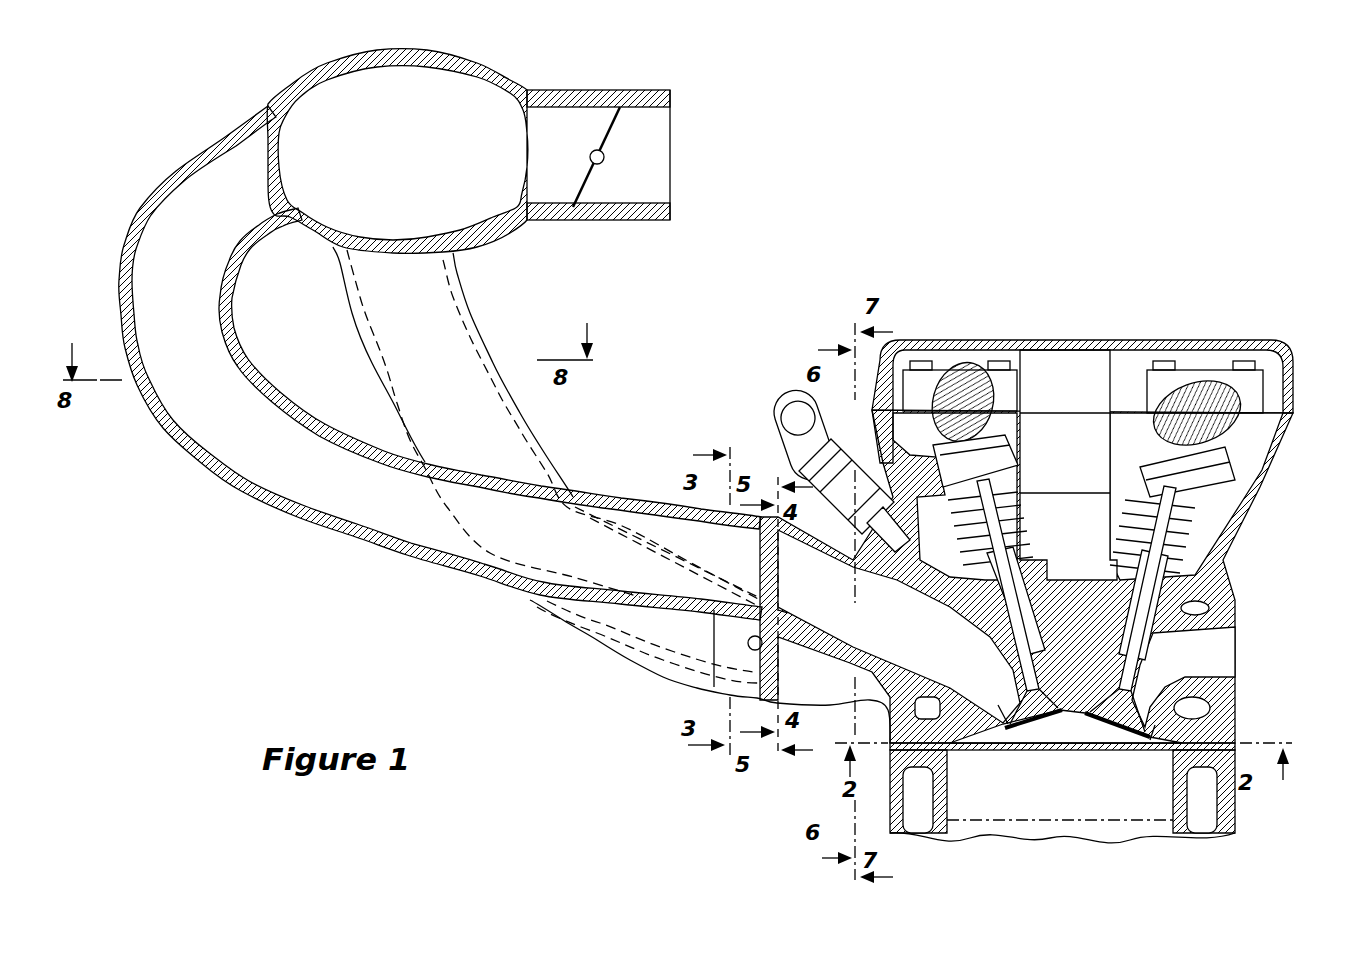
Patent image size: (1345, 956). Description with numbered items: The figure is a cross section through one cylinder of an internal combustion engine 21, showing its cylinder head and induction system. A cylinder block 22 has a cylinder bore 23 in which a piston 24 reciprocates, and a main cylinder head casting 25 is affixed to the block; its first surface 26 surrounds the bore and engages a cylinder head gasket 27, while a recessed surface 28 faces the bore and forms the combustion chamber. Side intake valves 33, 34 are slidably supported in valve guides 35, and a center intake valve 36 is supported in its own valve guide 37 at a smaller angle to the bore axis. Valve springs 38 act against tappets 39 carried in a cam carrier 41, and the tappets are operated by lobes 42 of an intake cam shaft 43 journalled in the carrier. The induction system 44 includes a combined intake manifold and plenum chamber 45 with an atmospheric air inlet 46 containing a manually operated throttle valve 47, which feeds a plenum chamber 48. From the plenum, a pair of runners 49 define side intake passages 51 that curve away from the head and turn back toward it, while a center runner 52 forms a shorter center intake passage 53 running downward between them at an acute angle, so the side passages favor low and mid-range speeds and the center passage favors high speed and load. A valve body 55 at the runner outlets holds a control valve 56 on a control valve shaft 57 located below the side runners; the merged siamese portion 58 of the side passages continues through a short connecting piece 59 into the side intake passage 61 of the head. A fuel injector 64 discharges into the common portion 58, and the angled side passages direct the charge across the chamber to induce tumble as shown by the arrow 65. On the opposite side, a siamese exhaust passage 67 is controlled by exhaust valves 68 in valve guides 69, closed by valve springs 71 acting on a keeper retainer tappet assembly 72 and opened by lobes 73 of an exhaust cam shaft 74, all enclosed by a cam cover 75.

The internal combustion engine 21 is at (1115, 302).
The cylinder block 22 is at (1225, 830).
The cylinder bore 23 is at (1192, 773).
The piston 24 is at (995, 845).
The main cylinder head casting 25 is at (1235, 680).
The first surface 26 is at (1225, 800).
The cylinder head gasket 27 is at (1233, 743).
The recessed surface 28 is at (1095, 740).
The side intake valve 33 is at (1040, 730).
The side intake valve 34 is at (1008, 585).
The valve guide 35 is at (1045, 620).
The center intake valve 36 is at (1000, 722).
The valve guide 37 is at (899, 626).
The valve spring 38 is at (1020, 562).
The tappet 39 is at (1010, 460).
The cam carrier 41 is at (1260, 488).
The lobe 42 is at (960, 360).
The intake cam shaft 43 is at (1005, 395).
The induction system 44 is at (200, 488).
The combined intake manifold and plenum chamber 45 is at (125, 270).
The atmospheric air inlet 46 is at (610, 92).
The throttle valve 47 is at (605, 150).
The plenum chamber 48 is at (455, 55).
The runner 49 is at (450, 582).
The side intake passage 51 is at (357, 510).
The center runner 52 is at (553, 467).
The center intake passage 53 is at (565, 605).
The valve body 55 is at (675, 690).
The control valve 56 is at (722, 672).
The control valve shaft 57 is at (713, 618).
The siamese portion 58 is at (645, 588).
The connecting piece 59 is at (838, 703).
The side intake passage 61 is at (905, 580).
The fuel injector 64 is at (849, 468).
The arrow 65 is at (1060, 808).
The siamese exhaust passage 67 is at (1235, 668).
The exhaust valve 68 is at (1118, 728).
The valve guide 69 is at (1150, 630).
The valve spring 71 is at (1130, 545).
The keeper retainer tappet assembly 72 is at (1202, 459).
The lobe 73 is at (1150, 400).
The exhaust cam shaft 74 is at (1195, 383).
The cam cover 75 is at (1265, 340).